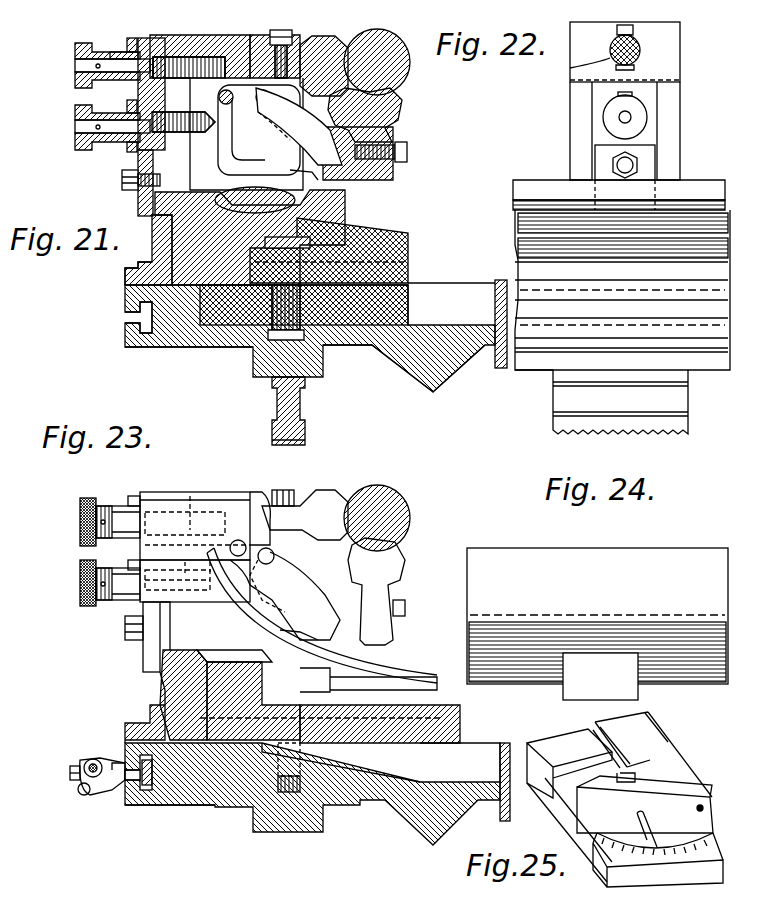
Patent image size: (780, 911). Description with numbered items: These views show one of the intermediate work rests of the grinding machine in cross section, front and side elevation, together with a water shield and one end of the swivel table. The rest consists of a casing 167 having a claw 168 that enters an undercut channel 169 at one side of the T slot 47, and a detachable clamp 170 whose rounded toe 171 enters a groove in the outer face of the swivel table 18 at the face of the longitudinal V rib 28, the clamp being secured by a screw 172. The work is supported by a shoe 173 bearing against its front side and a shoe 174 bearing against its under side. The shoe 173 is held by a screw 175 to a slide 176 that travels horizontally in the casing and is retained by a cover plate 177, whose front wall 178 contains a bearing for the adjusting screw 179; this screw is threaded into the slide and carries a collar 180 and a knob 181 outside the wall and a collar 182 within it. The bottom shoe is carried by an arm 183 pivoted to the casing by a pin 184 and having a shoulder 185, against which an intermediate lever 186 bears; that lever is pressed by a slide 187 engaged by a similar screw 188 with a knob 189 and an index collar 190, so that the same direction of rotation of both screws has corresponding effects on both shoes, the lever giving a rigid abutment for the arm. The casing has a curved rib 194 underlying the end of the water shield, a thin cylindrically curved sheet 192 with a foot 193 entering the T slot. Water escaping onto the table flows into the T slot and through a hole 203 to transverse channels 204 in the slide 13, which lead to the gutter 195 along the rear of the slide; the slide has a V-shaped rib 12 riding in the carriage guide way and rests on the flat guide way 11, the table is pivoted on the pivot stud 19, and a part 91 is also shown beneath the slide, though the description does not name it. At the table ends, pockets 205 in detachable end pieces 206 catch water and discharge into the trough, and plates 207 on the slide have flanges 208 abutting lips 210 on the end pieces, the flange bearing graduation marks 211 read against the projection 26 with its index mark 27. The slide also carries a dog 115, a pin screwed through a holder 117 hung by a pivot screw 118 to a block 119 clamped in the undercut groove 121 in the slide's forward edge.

In FIG. 21, the flat guide way 11 is at (168, 349).
In FIG. 22, the flat guide way 11 is at (530, 375).
In FIG. 21, the V-shaped rib 12 is at (433, 392).
In FIG. 21, the longitudinal reciprocating slide 13 is at (376, 330).
In FIG. 22, the longitudinal reciprocating slide 13 is at (705, 355).
In FIG. 23, the longitudinal reciprocating slide 13 is at (200, 792).
In FIG. 21, the swivel table 18 is at (140, 272).
In FIG. 23, the swivel table 18 is at (130, 700).
In FIG. 25, the swivel table 18 is at (565, 746).
In FIG. 21, the pivot stud 19 is at (256, 355).
In FIG. 23, the pivot stud 19 is at (278, 752).
In FIG. 25, the projection 26 is at (637, 818).
In FIG. 25, the index mark 27 is at (690, 824).
In FIG. 23, the V-shaped rib 28 is at (182, 660).
In FIG. 25, the V-shaped rib 28 is at (652, 742).
In FIG. 21, the T slot 47 is at (287, 242).
In FIG. 21, the rack bar 91 is at (306, 433).
In FIG. 22, the rack bar 91 is at (608, 425).
In FIG. 23, the dog 115 is at (84, 795).
In FIG. 23, the holder 117 is at (72, 786).
In FIG. 23, the pivot screw 118 is at (88, 762).
In FIG. 23, the block 119 is at (112, 763).
In FIG. 21, the undercut longitudinal groove 121 is at (124, 319).
In FIG. 22, the undercut longitudinal groove 121 is at (600, 312).
In FIG. 23, the undercut longitudinal groove 121 is at (122, 782).
In FIG. 23, the casing 167 is at (172, 630).
In FIG. 21, the claw 168 is at (302, 201).
In FIG. 21, the undercut channel 169 is at (255, 200).
In FIG. 21, the detachable clamp 170 is at (138, 201).
In FIG. 22, the detachable clamp 170 is at (648, 165).
In FIG. 23, the detachable clamp 170 is at (143, 672).
In FIG. 21, the rounded toe 171 is at (150, 247).
In FIG. 22, the rounded toe 171 is at (618, 211).
In FIG. 23, the rounded toe 171 is at (162, 690).
In FIG. 21, the screw 172 is at (122, 180).
In FIG. 22, the screw 172 is at (612, 165).
In FIG. 23, the screw 172 is at (125, 634).
In FIG. 21, the shoe 173 is at (338, 38).
In FIG. 23, the shoe 173 is at (336, 518).
In FIG. 21, the shoe 174 is at (402, 102).
In FIG. 23, the shoe 174 is at (376, 591).
In FIG. 21, the screw 175 is at (290, 30).
In FIG. 23, the screw 175 is at (280, 490).
In FIG. 21, the slide 176 is at (251, 40).
In FIG. 23, the slide 176 is at (246, 503).
In FIG. 21, the cover plate 177 is at (180, 36).
In FIG. 23, the cover plate 177 is at (152, 498).
In FIG. 21, the front wall 178 is at (138, 96).
In FIG. 22, the front wall 178 is at (657, 66).
In FIG. 21, the adjusting screw 179 is at (210, 48).
In FIG. 22, the adjusting screw 179 is at (610, 58).
In FIG. 23, the adjusting screw 179 is at (192, 496).
In FIG. 21, the collar 180 is at (118, 50).
In FIG. 22, the collar 180 is at (641, 50).
In FIG. 23, the collar 180 is at (122, 520).
In FIG. 21, the knob 181 is at (75, 48).
In FIG. 23, the knob 181 is at (80, 521).
In FIG. 21, the collar 182 is at (149, 38).
In FIG. 21, the arm 183 is at (294, 128).
In FIG. 23, the arm 183 is at (298, 600).
In FIG. 21, the pin 184 is at (271, 98).
In FIG. 23, the pin 184 is at (275, 560).
In FIG. 21, the shoulder 185 is at (303, 172).
In FIG. 23, the shoulder 185 is at (305, 633).
In FIG. 21, the intermediate lever 186 is at (259, 132).
In FIG. 23, the intermediate lever 186 is at (300, 606).
In FIG. 21, the slide 187 is at (187, 110).
In FIG. 23, the slide 187 is at (186, 561).
In FIG. 21, the screw 188 is at (80, 133).
In FIG. 21, the knob 189 is at (75, 113).
In FIG. 22, the knob 189 is at (608, 118).
In FIG. 23, the knob 189 is at (80, 586).
In FIG. 21, the index collar 190 is at (120, 146).
In FIG. 23, the index collar 190 is at (118, 596).
In FIG. 23, the sheet or plate 192 is at (413, 680).
In FIG. 24, the sheet or plate 192 is at (597, 616).
In FIG. 23, the foot or lug 193 is at (318, 676).
In FIG. 24, the foot or lug 193 is at (600, 676).
In FIG. 23, the curved rib 194 is at (218, 604).
In FIG. 21, the gutter or trough 195 is at (478, 292).
In FIG. 23, the gutter or trough 195 is at (465, 782).
In FIG. 21, the hole 203 is at (410, 244).
In FIG. 23, the hole 203 is at (441, 718).
In FIG. 21, the transverse channel 204 is at (409, 298).
In FIG. 23, the transverse channel 204 is at (341, 762).
In FIG. 25, the pocket 205 is at (640, 765).
In FIG. 25, the detachable end piece 206 is at (652, 792).
In FIG. 25, the plate 207 is at (635, 875).
In FIG. 25, the flange 208 is at (592, 866).
In FIG. 25, the lip 210 is at (597, 838).
In FIG. 25, the graduation marks 211 is at (640, 858).